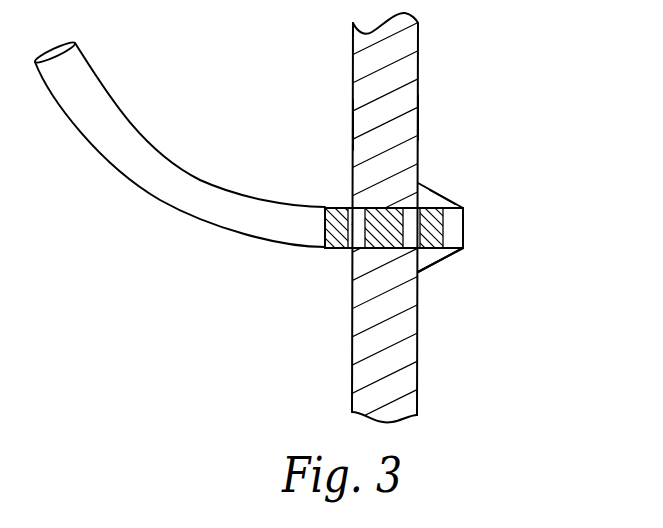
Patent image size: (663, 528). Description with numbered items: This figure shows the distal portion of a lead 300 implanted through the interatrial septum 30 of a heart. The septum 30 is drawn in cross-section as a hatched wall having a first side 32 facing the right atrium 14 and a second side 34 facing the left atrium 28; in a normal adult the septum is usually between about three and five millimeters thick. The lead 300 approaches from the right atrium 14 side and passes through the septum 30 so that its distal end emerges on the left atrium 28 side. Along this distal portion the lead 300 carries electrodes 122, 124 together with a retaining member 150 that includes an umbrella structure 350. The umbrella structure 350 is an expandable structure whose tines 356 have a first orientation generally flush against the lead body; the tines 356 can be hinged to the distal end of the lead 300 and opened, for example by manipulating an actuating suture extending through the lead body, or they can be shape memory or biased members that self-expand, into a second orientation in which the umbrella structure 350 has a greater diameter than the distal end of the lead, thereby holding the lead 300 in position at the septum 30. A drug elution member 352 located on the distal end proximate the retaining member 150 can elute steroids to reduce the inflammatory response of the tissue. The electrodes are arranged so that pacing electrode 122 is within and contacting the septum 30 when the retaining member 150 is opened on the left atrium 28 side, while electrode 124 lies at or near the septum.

The right atrium 14 is at (240, 95).
The left atrium 28 is at (584, 95).
The interatrial septum 30 is at (405, 75).
The first side 32 is at (352, 125).
The second side 34 is at (418, 115).
The pacing electrode 122 is at (408, 207).
The electrode 124 is at (297, 226).
The retaining member 150 is at (438, 187).
The lead 300 is at (113, 164).
The umbrella structure 350 is at (453, 262).
The drug elution member 352 is at (443, 228).
The tines 356 is at (443, 198).